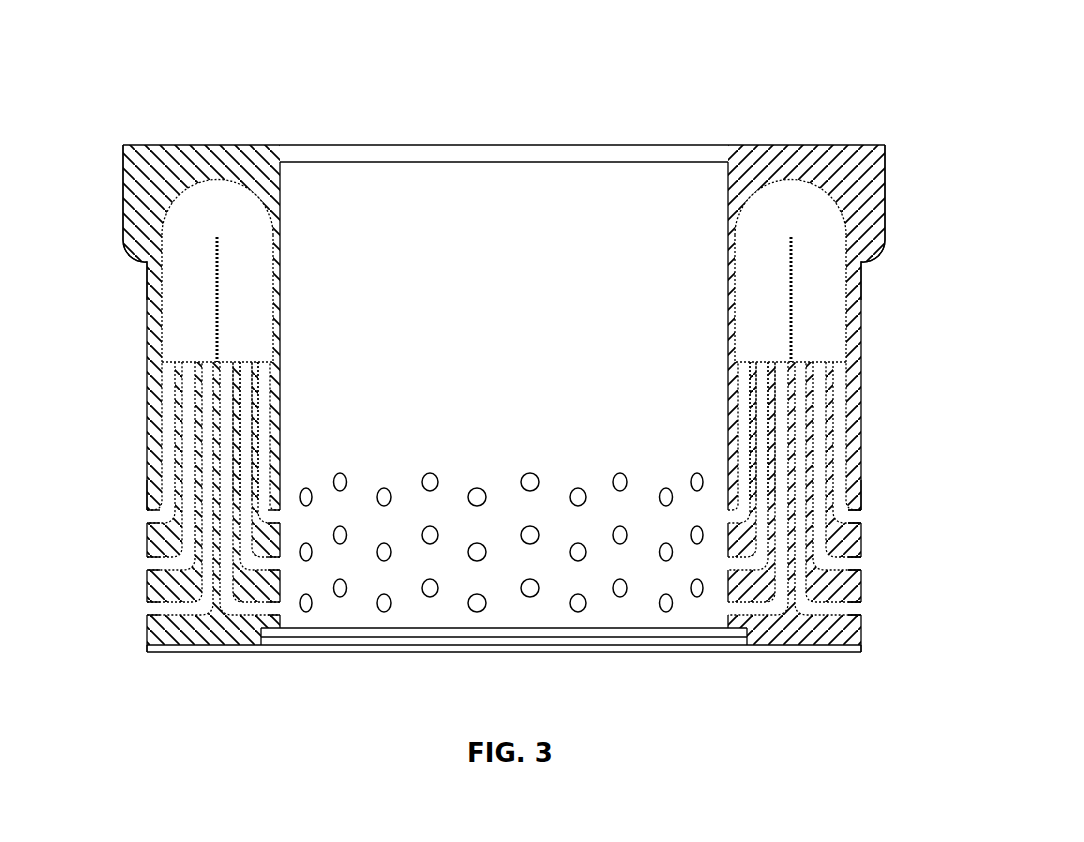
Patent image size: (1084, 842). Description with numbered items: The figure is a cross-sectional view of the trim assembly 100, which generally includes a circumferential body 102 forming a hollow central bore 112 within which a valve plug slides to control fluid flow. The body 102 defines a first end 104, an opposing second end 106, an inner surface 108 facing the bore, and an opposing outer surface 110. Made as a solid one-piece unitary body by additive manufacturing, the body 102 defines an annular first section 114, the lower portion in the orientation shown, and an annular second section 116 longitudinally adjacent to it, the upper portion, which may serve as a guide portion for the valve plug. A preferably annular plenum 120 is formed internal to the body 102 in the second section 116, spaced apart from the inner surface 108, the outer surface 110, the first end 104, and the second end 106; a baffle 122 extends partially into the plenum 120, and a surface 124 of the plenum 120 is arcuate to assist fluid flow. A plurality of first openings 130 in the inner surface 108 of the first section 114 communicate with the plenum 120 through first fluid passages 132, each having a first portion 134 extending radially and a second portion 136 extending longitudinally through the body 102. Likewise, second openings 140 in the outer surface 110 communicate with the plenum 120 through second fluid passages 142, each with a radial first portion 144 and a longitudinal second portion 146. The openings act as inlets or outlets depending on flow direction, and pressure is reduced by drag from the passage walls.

The trim assembly 100 is at (168, 50).
The circumferential body 102 is at (849, 162).
The first end 104 is at (772, 150).
The second end 106 is at (777, 654).
The inner surface 108 is at (724, 247).
The outer surface 110 is at (862, 340).
The hollow central bore 112 is at (412, 283).
The first section 114 is at (864, 497).
The second section 116 is at (864, 298).
The plenum 120 is at (196, 231).
The baffle 122 is at (216, 293).
The surface 124 is at (208, 185).
The first openings 130 is at (476, 487).
The first fluid passages 132 is at (262, 468).
The first portion 134 is at (276, 614).
The second portion 136 is at (275, 409).
The second openings 140 is at (146, 612).
The second fluid passages 142 is at (207, 435).
The first portion 144 is at (845, 616).
The second portion 146 is at (842, 416).